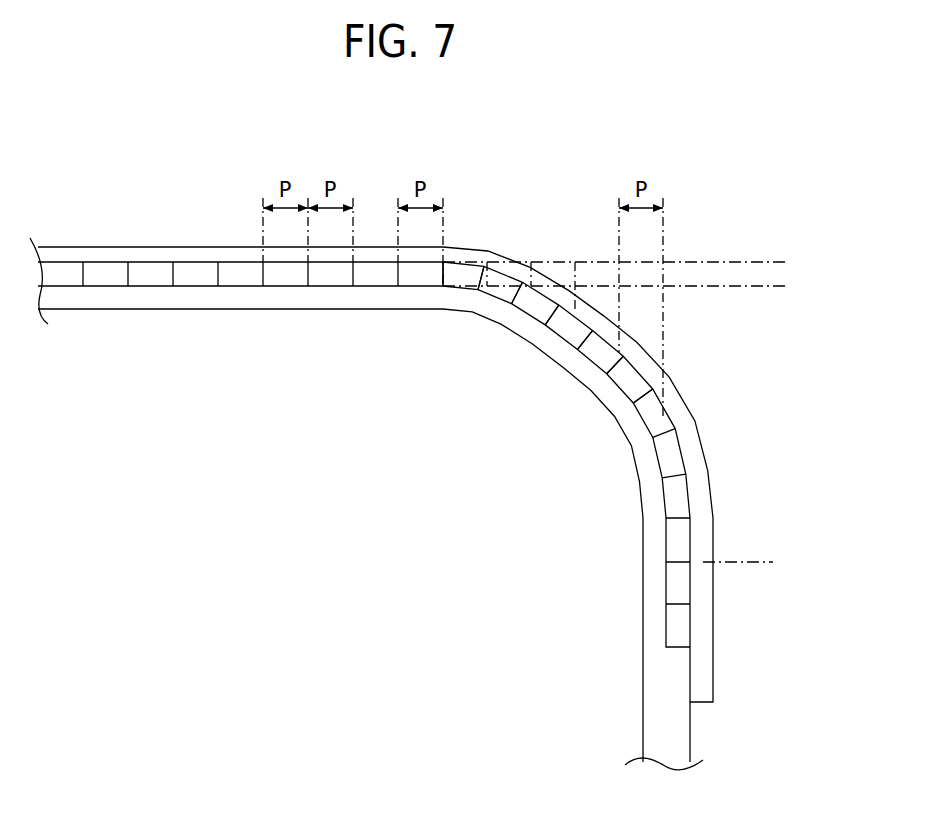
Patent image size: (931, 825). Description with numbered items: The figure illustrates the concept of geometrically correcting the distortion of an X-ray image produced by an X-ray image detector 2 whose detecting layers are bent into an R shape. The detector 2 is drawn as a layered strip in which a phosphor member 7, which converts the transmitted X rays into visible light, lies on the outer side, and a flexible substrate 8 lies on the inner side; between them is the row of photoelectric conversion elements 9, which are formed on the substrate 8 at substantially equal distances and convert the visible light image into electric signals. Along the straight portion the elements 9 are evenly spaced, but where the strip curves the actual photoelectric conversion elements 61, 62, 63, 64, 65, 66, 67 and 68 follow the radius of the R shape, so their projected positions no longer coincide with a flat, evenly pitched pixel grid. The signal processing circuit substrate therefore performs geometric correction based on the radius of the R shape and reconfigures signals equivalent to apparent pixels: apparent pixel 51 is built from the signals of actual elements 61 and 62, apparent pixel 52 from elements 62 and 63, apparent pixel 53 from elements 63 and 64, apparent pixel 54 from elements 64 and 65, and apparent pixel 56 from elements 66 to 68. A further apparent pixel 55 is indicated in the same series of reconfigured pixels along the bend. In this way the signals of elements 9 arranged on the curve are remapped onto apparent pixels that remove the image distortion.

The X-ray image detector 2 is at (385, 482).
The phosphor member 7 is at (146, 250).
The flexible substrate 8 is at (196, 301).
The photoelectric conversion element 9 is at (300, 303).
The apparent pixel 51 is at (434, 261).
The apparent pixel 52 is at (473, 262).
The apparent pixel 53 is at (515, 268).
The apparent pixel 54 is at (557, 270).
The fifth virtual reference line 55 is at (600, 268).
The apparent pixel 56 is at (652, 276).
The actual photoelectric conversion element 61 is at (414, 277).
The actual photoelectric conversion element 62 is at (464, 283).
The actual photoelectric conversion element 63 is at (500, 293).
The actual photoelectric conversion element 64 is at (536, 311).
The actual photoelectric conversion element 65 is at (568, 335).
The actual photoelectric conversion element 66 is at (598, 362).
The actual photoelectric conversion element 67 is at (637, 393).
The actual photoelectric conversion element 68 is at (664, 420).